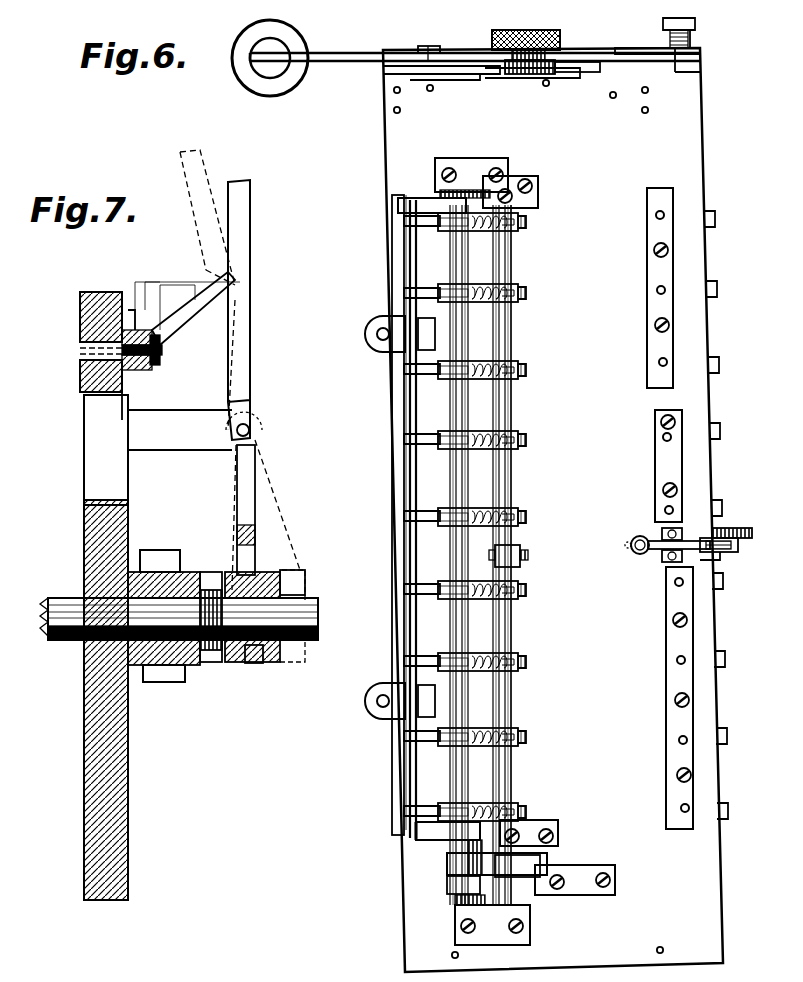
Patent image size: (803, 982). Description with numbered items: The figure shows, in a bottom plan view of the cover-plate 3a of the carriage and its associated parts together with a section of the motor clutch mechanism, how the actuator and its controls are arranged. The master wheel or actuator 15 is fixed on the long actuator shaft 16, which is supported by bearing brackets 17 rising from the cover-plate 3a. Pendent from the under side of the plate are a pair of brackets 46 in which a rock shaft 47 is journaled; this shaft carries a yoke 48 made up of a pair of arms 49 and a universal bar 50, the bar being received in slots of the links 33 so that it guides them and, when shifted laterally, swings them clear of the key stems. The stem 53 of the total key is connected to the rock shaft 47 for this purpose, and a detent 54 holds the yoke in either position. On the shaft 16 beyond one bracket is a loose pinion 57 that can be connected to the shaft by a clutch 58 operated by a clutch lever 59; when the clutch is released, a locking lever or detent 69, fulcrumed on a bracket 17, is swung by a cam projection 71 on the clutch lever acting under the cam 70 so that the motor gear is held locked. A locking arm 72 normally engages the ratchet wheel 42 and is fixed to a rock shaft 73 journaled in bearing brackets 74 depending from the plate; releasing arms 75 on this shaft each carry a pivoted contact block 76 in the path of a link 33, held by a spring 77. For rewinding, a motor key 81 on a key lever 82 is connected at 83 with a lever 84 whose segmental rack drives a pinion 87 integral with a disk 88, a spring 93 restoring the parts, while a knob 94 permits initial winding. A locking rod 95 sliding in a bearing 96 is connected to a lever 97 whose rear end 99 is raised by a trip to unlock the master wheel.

In FIG. 6, the cover-plate 3a is at (640, 486).
In FIG. 6, the master wheel or actuator 15 is at (748, 514).
In FIG. 7, the actuator shaft 16 is at (164, 614).
In FIG. 7, the bearing brackets 17 is at (84, 538).
In FIG. 6, the link 33 is at (380, 838).
In FIG. 6, the ratchet wheel 42 is at (735, 552).
In FIG. 6, the brackets 46 is at (485, 945).
In FIG. 6, the rock shaft 47 is at (470, 782).
In FIG. 6, the yoke 48 is at (392, 795).
In FIG. 6, the arms 49 is at (418, 858).
In FIG. 6, the universal bar 50 is at (372, 655).
In FIG. 6, the stem 53 is at (490, 876).
In FIG. 6, the detent 54 is at (530, 870).
In FIG. 7, the loose pinion 57 is at (165, 535).
In FIG. 7, the clutch 58 is at (280, 572).
In FIG. 7, the clutch lever 59 is at (250, 368).
In FIG. 7, the locking lever or detent 69 is at (142, 363).
In FIG. 7, the cam 70 is at (185, 282).
In FIG. 7, the cam projection 71 is at (215, 296).
In FIG. 6, the locking arm 72 is at (520, 552).
In FIG. 6, the rock shaft 73 is at (512, 398).
In FIG. 6, the bearing brackets 74 is at (556, 805).
In FIG. 6, the releasing arms 75 is at (530, 684).
In FIG. 6, the contact block 76 is at (424, 760).
In FIG. 6, the spring 77 is at (470, 760).
In FIG. 6, the motor key 81 is at (300, 40).
In FIG. 6, the key lever 82 is at (360, 52).
In FIG. 6, the connection 83 is at (432, 46).
In FIG. 6, the lever 84 is at (458, 68).
In FIG. 6, the pinion 87 is at (530, 74).
In FIG. 6, the disk 88 is at (578, 72).
In FIG. 6, the spring 93 is at (655, 32).
In FIG. 6, the knob 94 is at (560, 36).
In FIG. 6, the locking rod 95 is at (646, 540).
In FIG. 6, the bearing 96 is at (635, 553).
In FIG. 6, the lever 97 is at (680, 550).
In FIG. 6, the rear end 99 is at (722, 556).